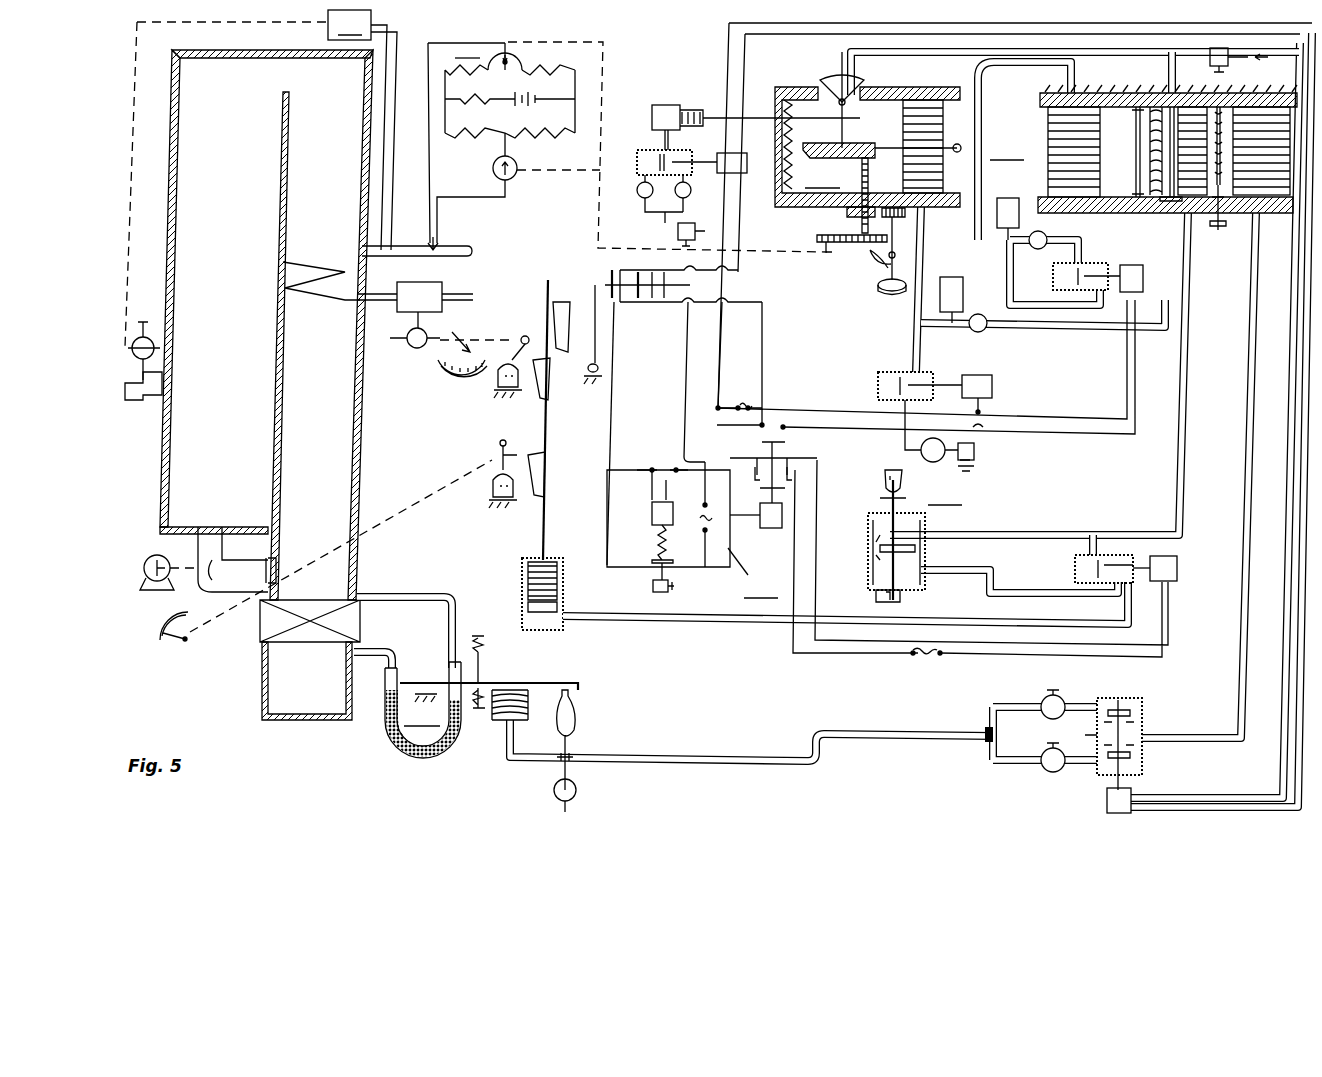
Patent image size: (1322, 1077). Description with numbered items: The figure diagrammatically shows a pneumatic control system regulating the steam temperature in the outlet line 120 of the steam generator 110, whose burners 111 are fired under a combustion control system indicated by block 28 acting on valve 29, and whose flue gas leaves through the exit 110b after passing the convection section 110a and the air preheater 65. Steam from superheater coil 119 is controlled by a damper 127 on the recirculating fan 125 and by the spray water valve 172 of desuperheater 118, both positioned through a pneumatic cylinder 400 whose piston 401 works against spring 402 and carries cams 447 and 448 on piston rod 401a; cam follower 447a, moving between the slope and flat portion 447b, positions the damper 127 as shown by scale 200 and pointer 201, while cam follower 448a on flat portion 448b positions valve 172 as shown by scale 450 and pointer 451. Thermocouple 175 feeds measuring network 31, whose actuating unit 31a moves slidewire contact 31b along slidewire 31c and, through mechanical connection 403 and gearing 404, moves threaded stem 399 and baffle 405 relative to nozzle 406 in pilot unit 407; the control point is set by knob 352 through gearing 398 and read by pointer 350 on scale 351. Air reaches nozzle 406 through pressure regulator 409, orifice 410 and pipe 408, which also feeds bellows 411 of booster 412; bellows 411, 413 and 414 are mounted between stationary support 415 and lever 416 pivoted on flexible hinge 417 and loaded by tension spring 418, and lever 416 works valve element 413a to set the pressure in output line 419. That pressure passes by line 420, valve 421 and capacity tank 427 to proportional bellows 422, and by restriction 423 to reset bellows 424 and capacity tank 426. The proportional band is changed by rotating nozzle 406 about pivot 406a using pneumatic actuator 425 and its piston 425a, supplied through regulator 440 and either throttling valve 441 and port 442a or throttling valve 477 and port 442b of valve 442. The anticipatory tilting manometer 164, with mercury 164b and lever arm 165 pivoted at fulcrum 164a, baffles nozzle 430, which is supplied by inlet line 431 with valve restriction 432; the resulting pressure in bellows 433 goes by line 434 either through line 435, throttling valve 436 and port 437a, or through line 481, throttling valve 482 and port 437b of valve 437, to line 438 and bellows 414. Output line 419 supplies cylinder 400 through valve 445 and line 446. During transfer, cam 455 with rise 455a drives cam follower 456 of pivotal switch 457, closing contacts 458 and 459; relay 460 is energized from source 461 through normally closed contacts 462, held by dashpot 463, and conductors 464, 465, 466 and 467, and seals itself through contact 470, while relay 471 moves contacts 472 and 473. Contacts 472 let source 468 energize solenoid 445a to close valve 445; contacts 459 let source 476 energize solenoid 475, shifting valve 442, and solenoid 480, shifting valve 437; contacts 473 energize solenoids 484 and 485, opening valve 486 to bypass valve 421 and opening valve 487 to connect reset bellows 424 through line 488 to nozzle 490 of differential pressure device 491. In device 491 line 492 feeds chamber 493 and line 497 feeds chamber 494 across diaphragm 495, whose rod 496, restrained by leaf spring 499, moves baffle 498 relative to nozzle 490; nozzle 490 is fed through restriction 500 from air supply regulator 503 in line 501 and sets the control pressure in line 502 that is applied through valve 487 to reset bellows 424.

The controller 28 is at (362, 130).
The valve 29 is at (160, 346).
The bridge circuit 31 is at (501, 140).
The current source 31a is at (517, 175).
The bridge node 31b is at (510, 50).
The bridge arc 31c is at (523, 64).
The heat exchanger 65 is at (262, 637).
The tank 110 is at (242, 226).
The tank compartment 110a is at (340, 389).
The lower tank 110b is at (338, 699).
The inlet fitting 111 is at (163, 396).
The float block 118 is at (430, 282).
The heating element 119 is at (318, 258).
The electrode rod 120 is at (467, 246).
The outlet pipe 125 is at (200, 560).
The pipe cap 127 is at (255, 566).
The U-tube 164 is at (423, 710).
The beam 164a is at (428, 683).
The U-tube bend 164b is at (392, 738).
The lever 165 is at (560, 683).
The valve 172 is at (410, 346).
The electrode tip 175 is at (434, 243).
The dial 200 is at (168, 622).
The pointer 201 is at (185, 641).
The pivot 350 is at (888, 258).
The arm 351 is at (876, 266).
The weight 352 is at (897, 296).
The gear 398 is at (846, 213).
The rack 399 is at (870, 188).
The actuator unit 400 is at (523, 557).
The piston 401 is at (560, 605).
The piston rod 401a is at (545, 525).
The cylinder 402 is at (522, 584).
The control unit 403 is at (598, 222).
The rack 404 is at (845, 244).
The piston 405 is at (863, 140).
The rod 406 is at (846, 140).
The flapper 406a is at (838, 100).
The housing 407 is at (867, 147).
The pipe 408 is at (1025, 55).
The fitting 409 is at (1230, 62).
The pipe 410 is at (1158, 56).
The bellows 411 is at (1048, 124).
The bellows unit 412 is at (1007, 150).
The bellows 413 is at (1192, 107).
The rod 413a is at (1170, 206).
The bellows 414 is at (1280, 213).
The top plate 415 is at (1272, 92).
The bottom plate 416 is at (1095, 218).
The rod 417 is at (1136, 150).
The spring bolt 418 is at (1218, 231).
The pipe 419 is at (1189, 283).
The pipe 420 is at (1125, 240).
The valve 421 is at (1042, 232).
The bellows 422 is at (910, 98).
The valve 423 is at (988, 330).
The wall 424 is at (962, 205).
The solenoid 425 is at (660, 105).
The spring 425a is at (690, 108).
The box 426 is at (975, 274).
The box 427 is at (1004, 198).
The bulb 430 is at (576, 718).
The valve 431 is at (578, 793).
The fitting 432 is at (575, 758).
The coil 433 is at (500, 722).
The pipe 434 is at (725, 757).
The pipe 435 is at (996, 705).
The valve 436 is at (1060, 697).
The cylinder 437 is at (1188, 688).
The piston 437a is at (1140, 714).
The piston 437b is at (1140, 754).
The pipe 438 is at (1240, 590).
The box 440 is at (678, 232).
The valve 441 is at (637, 192).
The valve 442 is at (637, 164).
The rod 442a is at (662, 142).
The rod 442b is at (684, 160).
The valve 445 is at (1075, 566).
The actuator 445a is at (1177, 566).
The pipe 446 is at (992, 628).
The cam 447 is at (545, 468).
The pin 447a is at (500, 442).
The switch 447b is at (530, 500).
The cam 448 is at (552, 392).
The pin 448a is at (526, 334).
The switch 448b is at (522, 395).
The dial 450 is at (452, 370).
The pointer 451 is at (470, 331).
The plate 455 is at (608, 282).
The cam 455a is at (568, 356).
The plate 456 is at (634, 286).
The rod 457 is at (596, 335).
The block 458 is at (618, 278).
The shaft 459 is at (657, 298).
The solenoid 460 is at (690, 492).
The circuit 461 is at (753, 573).
The spring 462 is at (664, 556).
The box 463 is at (670, 592).
The box 464 is at (607, 530).
The wire 465 is at (618, 420).
The wire 466 is at (687, 354).
The circuit 467 is at (706, 468).
The AC source 468 is at (926, 663).
The contact 470 is at (652, 468).
The solenoid 471 is at (771, 530).
The contact 472 is at (754, 478).
The plate 473 is at (786, 444).
The block 475 is at (748, 173).
The AC source 476 is at (742, 402).
The valve 477 is at (690, 195).
The box 480 is at (1131, 795).
The pipe 481 is at (1010, 765).
The valve 482 is at (1053, 772).
The actuator 484 is at (1143, 280).
The actuator 485 is at (992, 387).
The valve 486 is at (1060, 275).
The valve 487 is at (878, 385).
The pipe 488 is at (925, 274).
The cup 490 is at (904, 479).
The unit 491 is at (945, 495).
The pipe 492 is at (1050, 536).
The cylinder 493 is at (925, 522).
The piston 494 is at (916, 550).
The cylinder wall 495 is at (870, 548).
The rod 496 is at (890, 506).
The pipe 497 is at (975, 572).
The plate 498 is at (886, 496).
The box 499 is at (902, 600).
The wire 500 is at (940, 436).
The box 501 is at (975, 452).
The line 502 is at (905, 452).
The ground 503 is at (972, 466).